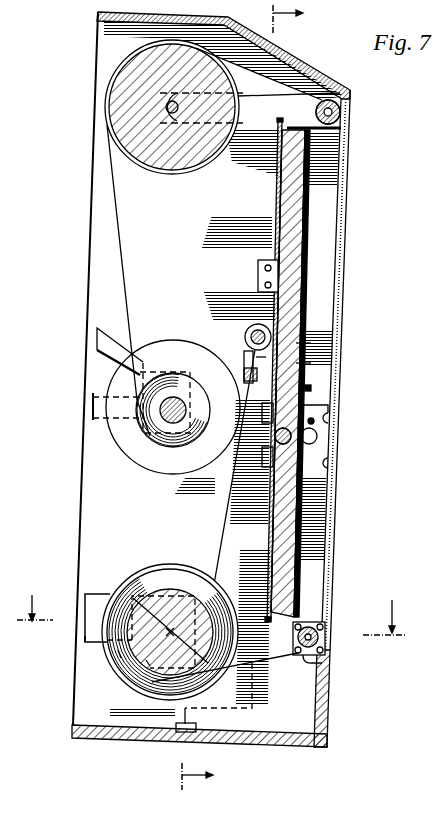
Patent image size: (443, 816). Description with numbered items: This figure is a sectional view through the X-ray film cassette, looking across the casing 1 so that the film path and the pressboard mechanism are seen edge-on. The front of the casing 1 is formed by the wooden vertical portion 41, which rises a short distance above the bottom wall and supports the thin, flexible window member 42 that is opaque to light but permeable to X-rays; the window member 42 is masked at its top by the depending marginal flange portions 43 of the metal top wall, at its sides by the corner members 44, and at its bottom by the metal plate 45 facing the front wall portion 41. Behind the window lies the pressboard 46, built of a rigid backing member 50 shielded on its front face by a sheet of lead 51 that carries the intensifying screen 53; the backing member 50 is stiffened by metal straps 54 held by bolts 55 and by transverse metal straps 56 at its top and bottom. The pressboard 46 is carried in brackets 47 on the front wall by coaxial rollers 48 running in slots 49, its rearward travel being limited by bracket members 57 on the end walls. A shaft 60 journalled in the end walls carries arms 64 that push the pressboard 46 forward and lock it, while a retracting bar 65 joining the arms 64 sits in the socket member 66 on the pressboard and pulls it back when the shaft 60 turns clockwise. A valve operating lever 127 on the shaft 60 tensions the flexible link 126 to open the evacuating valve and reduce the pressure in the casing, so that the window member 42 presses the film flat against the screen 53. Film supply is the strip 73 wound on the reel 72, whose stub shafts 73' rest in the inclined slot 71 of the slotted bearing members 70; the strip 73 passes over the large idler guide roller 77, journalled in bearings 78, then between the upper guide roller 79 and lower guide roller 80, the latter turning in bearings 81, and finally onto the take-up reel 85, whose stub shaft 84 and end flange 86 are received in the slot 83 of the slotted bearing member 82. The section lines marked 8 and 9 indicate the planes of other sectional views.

The casing 1 is at (297, 745).
The section line 8- 8 is at (249, 397).
The section line 9- 9 is at (212, 628).
The vertical portion of front wall 41 is at (318, 711).
The window member 42 is at (330, 557).
The depending marginal flange portions 43 is at (351, 115).
The corner members 44 is at (345, 208).
The metal plate 45 is at (326, 689).
The pressboard 46 is at (310, 388).
The brackets 47 is at (313, 455).
The coaxial rollers 48 is at (328, 419).
The slots 49 is at (316, 437).
The backing member 50 is at (292, 219).
The sheet of lead 51 is at (303, 201).
The intensifying screen 53 is at (311, 231).
The metal straps 54 is at (279, 180).
The bolts 55 is at (287, 154).
The transverse metal straps 56 is at (283, 119).
The bracket members 57 is at (258, 275).
The shaft 60 is at (247, 332).
The arms 64 is at (303, 343).
The retracting bar 65 is at (300, 363).
The socket member 66 is at (263, 357).
The slotted bearing members 70 is at (97, 334).
The slot 71 is at (98, 380).
The reel 72 is at (156, 471).
The strip 73 is at (197, 428).
The stub shafts 73' is at (122, 443).
The idler guide roller 77 is at (170, 166).
The bearings 78 is at (268, 96).
The upper guide roller 79 is at (339, 104).
The lower guide roller 80 is at (325, 667).
The bearings 81 is at (307, 656).
The slotted bearing member 82 is at (85, 638).
The slot 83 is at (110, 594).
The stub shaft 84 is at (118, 655).
The take-up reel 85 is at (148, 663).
The end flange 86 is at (174, 563).
The flexible link 126 is at (228, 500).
The valve operating lever 127 is at (244, 360).